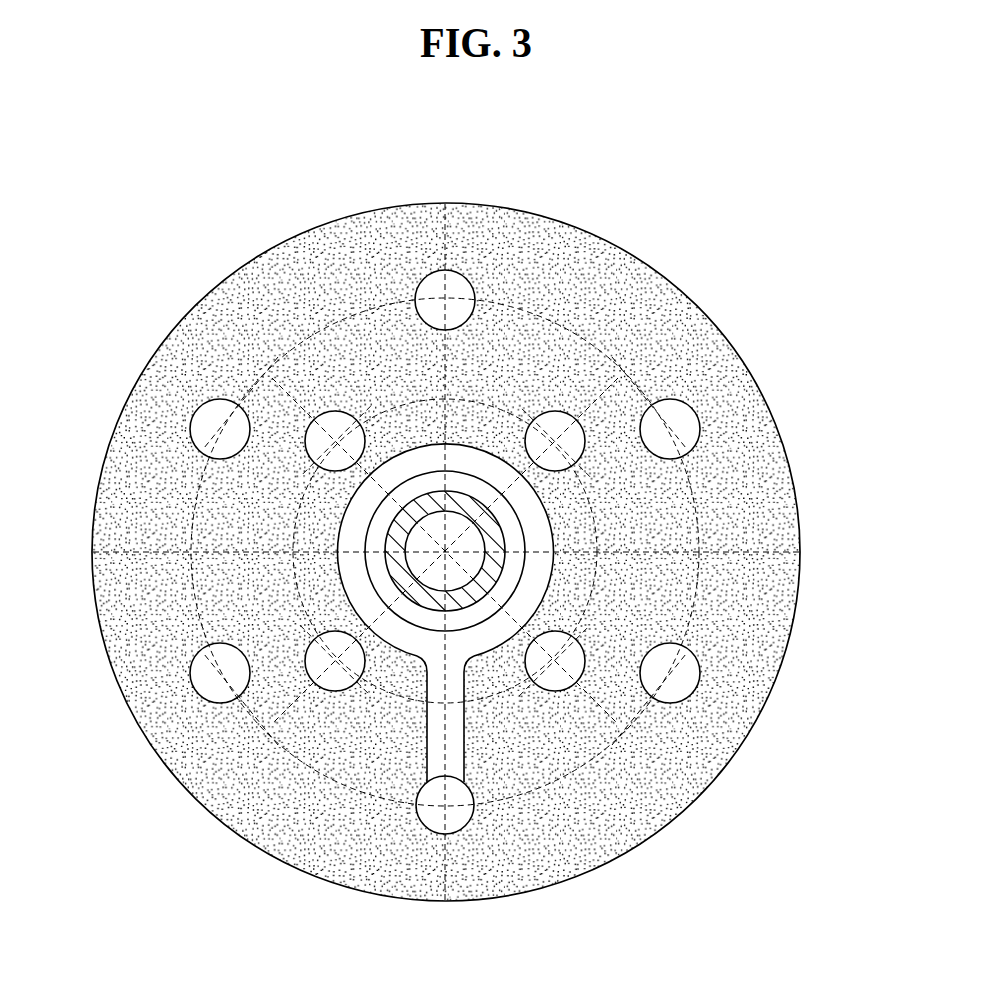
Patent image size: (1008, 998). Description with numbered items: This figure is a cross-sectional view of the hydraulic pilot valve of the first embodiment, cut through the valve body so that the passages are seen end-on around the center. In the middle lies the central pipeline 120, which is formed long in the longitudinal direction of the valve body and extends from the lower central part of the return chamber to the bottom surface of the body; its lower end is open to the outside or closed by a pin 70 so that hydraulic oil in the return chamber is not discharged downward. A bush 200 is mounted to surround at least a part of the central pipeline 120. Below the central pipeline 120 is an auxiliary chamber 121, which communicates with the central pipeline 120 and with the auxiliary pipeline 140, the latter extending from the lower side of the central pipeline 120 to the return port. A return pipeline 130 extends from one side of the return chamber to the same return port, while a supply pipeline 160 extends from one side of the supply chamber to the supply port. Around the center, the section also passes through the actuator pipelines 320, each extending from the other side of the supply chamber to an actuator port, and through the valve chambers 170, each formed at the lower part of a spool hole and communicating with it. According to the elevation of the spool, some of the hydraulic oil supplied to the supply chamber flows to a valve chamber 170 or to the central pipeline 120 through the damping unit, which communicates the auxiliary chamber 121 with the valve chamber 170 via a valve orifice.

The pin 70 is at (477, 487).
The central pipeline 120 is at (433, 580).
The auxiliary chamber 121 is at (540, 533).
The return pipeline 130 is at (461, 826).
The auxiliary pipeline 140 is at (464, 758).
The supply pipeline 160 is at (433, 271).
The valve chamber 170 is at (317, 420).
The bush 200 is at (433, 505).
The actuator pipeline 320 is at (193, 420).